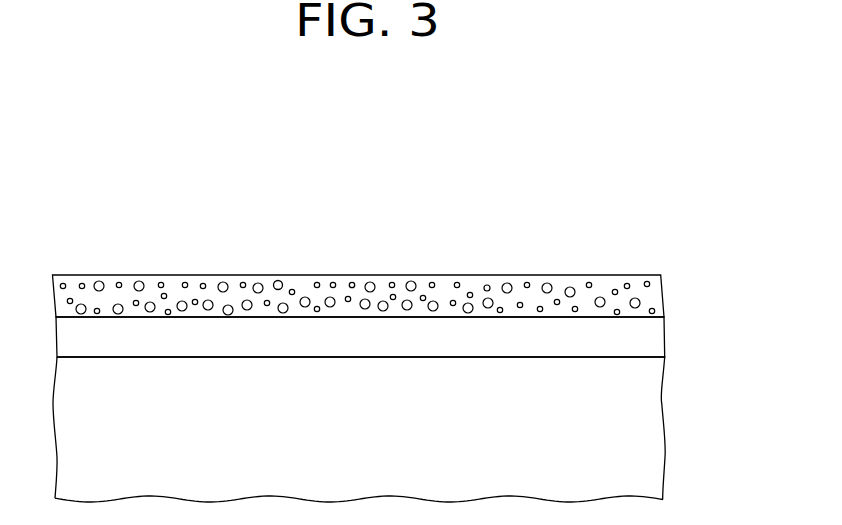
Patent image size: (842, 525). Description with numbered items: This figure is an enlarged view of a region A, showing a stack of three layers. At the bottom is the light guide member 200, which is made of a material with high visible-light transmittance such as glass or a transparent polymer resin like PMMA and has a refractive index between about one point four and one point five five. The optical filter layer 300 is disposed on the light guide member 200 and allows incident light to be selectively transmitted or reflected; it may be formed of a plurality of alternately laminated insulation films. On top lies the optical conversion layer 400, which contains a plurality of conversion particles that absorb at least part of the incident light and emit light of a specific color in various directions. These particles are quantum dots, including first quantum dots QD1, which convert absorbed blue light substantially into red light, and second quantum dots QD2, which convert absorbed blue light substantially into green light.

The region A is at (666, 186).
The light guide member 200 is at (643, 426).
The optical filter layer 300 is at (643, 339).
The optical conversion layer 400 is at (643, 295).
The first quantum dots QD1 is at (278, 281).
The second quantum dots QD2 is at (352, 282).